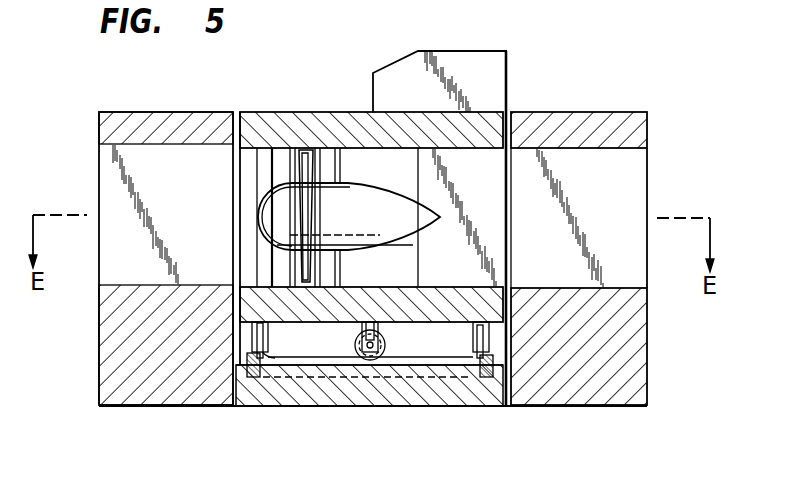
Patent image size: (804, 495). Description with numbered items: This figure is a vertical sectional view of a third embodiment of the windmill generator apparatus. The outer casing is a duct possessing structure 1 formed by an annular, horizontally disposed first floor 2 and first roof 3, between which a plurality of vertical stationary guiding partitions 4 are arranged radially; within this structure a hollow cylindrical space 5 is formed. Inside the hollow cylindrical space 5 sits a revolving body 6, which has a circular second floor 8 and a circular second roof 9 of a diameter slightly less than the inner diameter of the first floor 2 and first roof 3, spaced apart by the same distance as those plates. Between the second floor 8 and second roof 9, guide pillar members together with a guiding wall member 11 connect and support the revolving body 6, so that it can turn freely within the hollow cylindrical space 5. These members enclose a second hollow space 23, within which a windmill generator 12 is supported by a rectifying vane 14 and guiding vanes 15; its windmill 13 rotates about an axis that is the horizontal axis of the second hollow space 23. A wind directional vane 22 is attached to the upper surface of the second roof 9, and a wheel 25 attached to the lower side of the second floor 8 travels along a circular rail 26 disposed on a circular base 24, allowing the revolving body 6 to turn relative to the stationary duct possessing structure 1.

The duct possessing structure 1 is at (143, 110).
The first floor 2 is at (597, 400).
The first roof 3 is at (595, 113).
The vertical stationary guiding partitions 4 is at (110, 180).
The hollow cylindrical space 5 is at (239, 112).
The revolving body 6 is at (335, 328).
The second floor 8 is at (430, 316).
The second roof 9 is at (357, 118).
The guiding wall member 11 is at (430, 253).
The windmill generator 12 is at (380, 184).
The windmill 13 is at (307, 150).
The rectifying vane 14 is at (268, 158).
The guiding vanes 15 is at (291, 160).
The wind directional vane 22 is at (493, 65).
The second hollow space 23 is at (249, 165).
The circular base 24 is at (433, 398).
The wheel 25 is at (268, 360).
The circular rail 26 is at (253, 378).